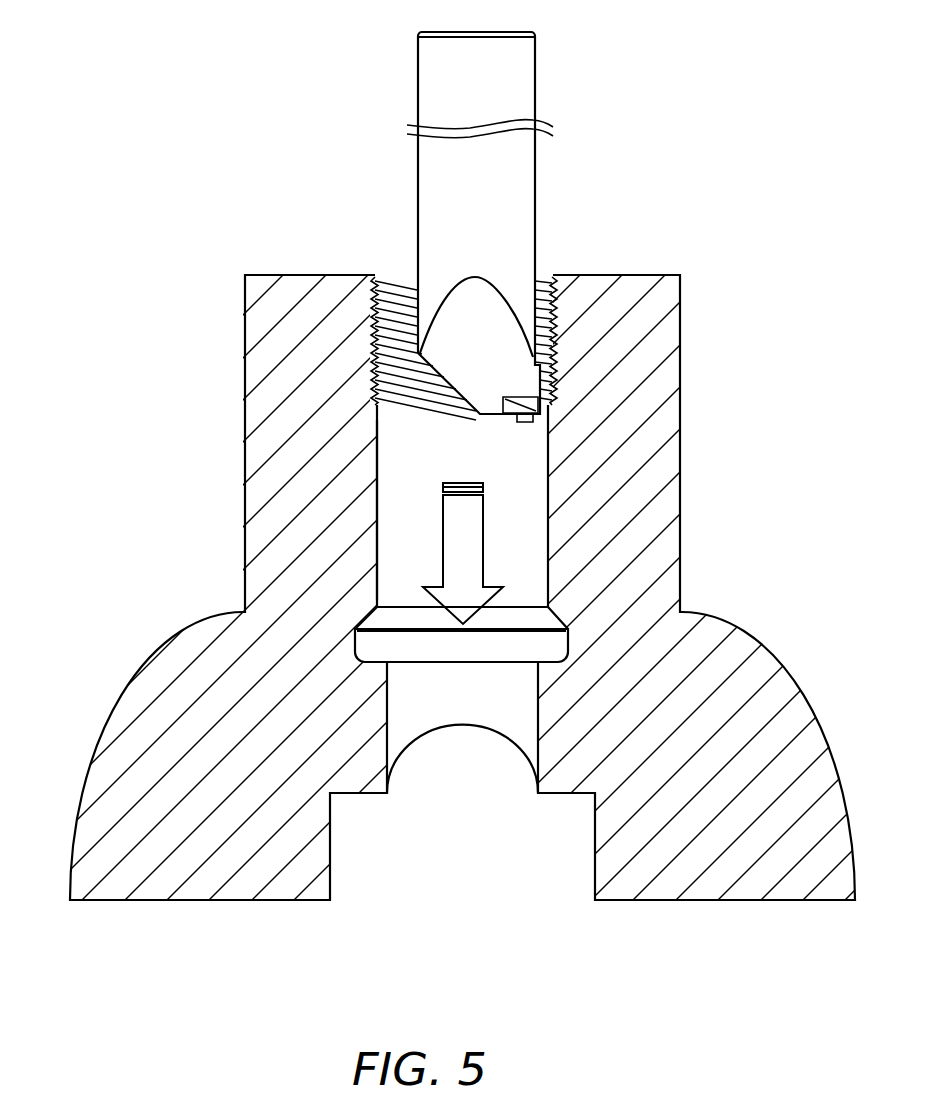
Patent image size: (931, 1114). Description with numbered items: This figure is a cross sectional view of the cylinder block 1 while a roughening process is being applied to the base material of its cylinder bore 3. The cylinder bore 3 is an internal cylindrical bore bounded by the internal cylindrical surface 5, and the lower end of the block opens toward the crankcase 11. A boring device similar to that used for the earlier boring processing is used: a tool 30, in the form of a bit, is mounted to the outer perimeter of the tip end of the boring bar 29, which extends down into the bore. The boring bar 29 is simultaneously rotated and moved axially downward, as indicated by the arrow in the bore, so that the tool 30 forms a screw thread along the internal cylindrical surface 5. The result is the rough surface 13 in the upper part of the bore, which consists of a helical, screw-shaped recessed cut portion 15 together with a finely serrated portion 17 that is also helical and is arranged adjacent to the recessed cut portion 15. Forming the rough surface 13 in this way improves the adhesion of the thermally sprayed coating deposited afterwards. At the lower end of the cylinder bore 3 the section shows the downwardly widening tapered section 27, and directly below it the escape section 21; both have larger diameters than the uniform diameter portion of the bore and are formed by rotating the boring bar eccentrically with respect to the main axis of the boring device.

The cylinder block 1 is at (680, 322).
The cylinder bore 3 is at (407, 457).
The internal cylindrical surface 5 is at (376, 505).
The crankcase 11 is at (450, 866).
The rough surface 13 is at (444, 281).
The recessed cut portion 15 is at (378, 300).
The serrated portion 17 is at (393, 298).
The escape section 21 is at (357, 642).
The tapered section 27 is at (384, 613).
The boring bar 29 is at (535, 77).
The tool 30 is at (541, 420).